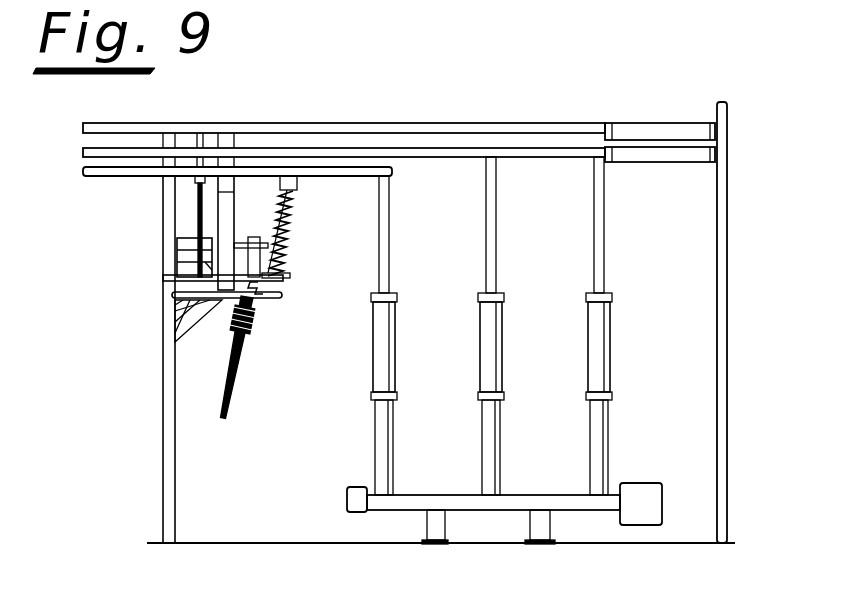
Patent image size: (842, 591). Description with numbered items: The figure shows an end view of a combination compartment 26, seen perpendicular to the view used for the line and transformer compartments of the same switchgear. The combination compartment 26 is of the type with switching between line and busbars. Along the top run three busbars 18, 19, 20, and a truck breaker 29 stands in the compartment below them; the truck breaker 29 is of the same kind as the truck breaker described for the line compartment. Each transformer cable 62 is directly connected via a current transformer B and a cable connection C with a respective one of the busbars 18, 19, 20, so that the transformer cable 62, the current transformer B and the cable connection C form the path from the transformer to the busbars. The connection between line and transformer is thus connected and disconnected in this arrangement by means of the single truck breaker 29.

The busbar 18 is at (333, 172).
The busbar 19 is at (375, 152).
The busbar 20 is at (415, 130).
The combination compartment 26 is at (160, 403).
The truck breaker 29 is at (612, 352).
The transformer cable 62 is at (208, 350).
The current transformer B is at (262, 320).
The cable connection C is at (288, 212).